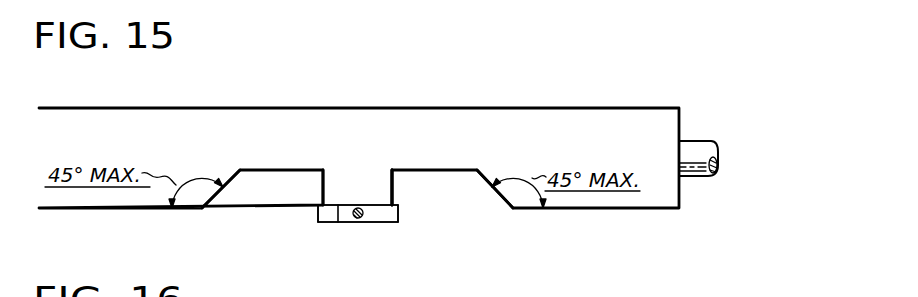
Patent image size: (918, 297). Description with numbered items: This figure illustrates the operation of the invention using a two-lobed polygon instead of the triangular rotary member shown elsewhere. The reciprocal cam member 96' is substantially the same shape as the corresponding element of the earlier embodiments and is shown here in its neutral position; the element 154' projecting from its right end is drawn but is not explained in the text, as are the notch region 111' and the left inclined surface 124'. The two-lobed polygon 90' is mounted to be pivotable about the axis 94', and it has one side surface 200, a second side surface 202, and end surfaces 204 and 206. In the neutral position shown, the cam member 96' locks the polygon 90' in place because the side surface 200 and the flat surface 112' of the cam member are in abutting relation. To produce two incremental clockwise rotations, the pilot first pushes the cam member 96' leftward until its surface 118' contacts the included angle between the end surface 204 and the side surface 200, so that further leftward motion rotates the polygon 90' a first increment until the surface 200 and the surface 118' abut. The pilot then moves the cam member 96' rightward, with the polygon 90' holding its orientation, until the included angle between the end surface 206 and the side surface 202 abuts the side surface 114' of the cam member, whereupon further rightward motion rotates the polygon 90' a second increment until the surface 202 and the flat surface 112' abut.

The reciprocal cam member 96' is at (359, 128).
The shaft 154' is at (724, 136).
The side surface 200 is at (375, 205).
The second side surface 202 is at (388, 223).
The end surface 204 is at (399, 215).
The polygon 90' is at (395, 246).
The axis 94' is at (354, 252).
The flat surface 112' is at (336, 237).
The end surface 206 is at (318, 215).
The notch 111' is at (357, 185).
The side surface 114' is at (436, 187).
The left inclined surface 124' is at (203, 207).
The surface 118' is at (519, 213).